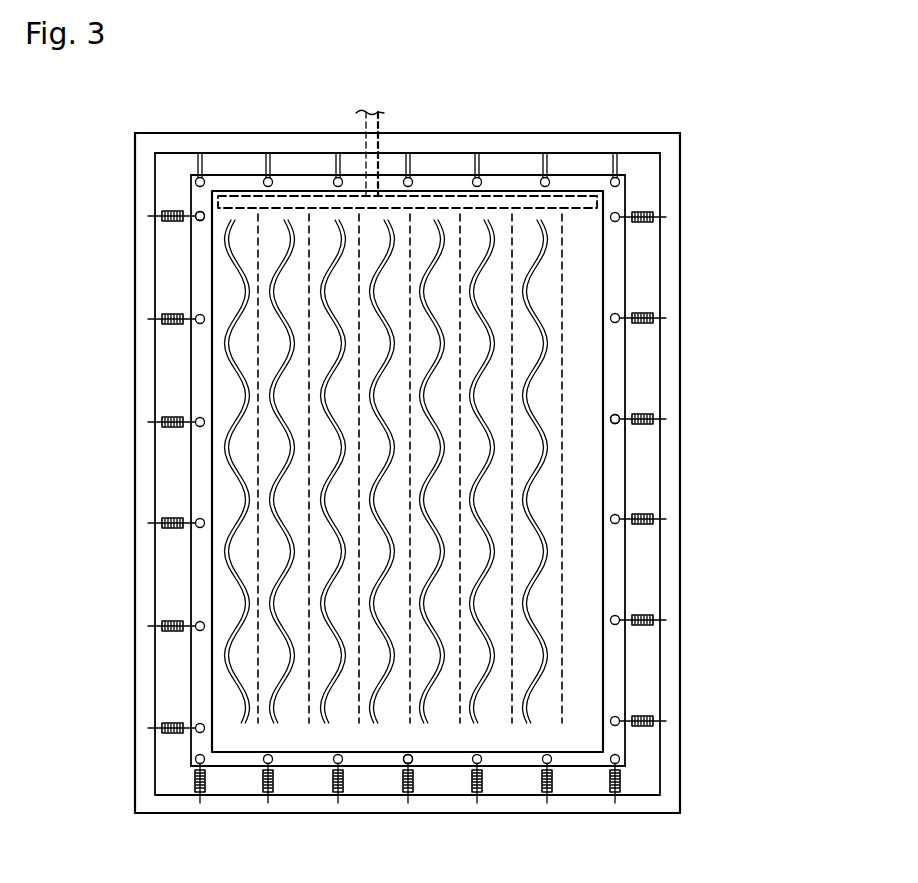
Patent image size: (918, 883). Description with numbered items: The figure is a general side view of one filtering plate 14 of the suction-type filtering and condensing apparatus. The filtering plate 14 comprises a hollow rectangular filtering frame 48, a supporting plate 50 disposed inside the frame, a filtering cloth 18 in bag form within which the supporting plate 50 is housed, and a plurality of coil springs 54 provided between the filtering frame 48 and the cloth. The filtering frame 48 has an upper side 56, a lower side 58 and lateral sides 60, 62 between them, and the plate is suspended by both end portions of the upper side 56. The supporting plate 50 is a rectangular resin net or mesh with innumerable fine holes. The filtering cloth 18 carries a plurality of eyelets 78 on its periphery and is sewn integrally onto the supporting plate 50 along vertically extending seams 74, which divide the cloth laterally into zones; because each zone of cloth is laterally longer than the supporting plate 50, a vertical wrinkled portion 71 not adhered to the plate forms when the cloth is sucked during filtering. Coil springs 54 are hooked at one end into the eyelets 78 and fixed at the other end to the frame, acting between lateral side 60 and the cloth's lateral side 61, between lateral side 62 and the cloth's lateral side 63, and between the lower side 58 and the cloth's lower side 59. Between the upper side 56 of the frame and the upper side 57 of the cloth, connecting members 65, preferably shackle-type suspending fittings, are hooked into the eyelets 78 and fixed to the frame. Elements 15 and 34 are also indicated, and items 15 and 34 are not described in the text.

The filtering plate 14 is at (714, 272).
The header 15 is at (255, 198).
The filtering cloth 18 is at (413, 474).
The pipe 34 is at (381, 118).
The filtering frame 48 is at (522, 122).
The supporting plate 50 is at (615, 470).
The coil spring 54 is at (178, 313).
The upper side 56 is at (470, 138).
The upper side 57 is at (303, 184).
The lower side 58 is at (390, 805).
The lower side 59 is at (320, 758).
The lateral side 60 is at (148, 443).
The lateral side 61 is at (197, 367).
The lateral side 62 is at (665, 549).
The lateral side 63 is at (613, 343).
The connecting member 65 is at (198, 164).
The wrinkled portion 71 is at (239, 477).
The seam 74 is at (510, 304).
The eyelet 78 is at (199, 221).